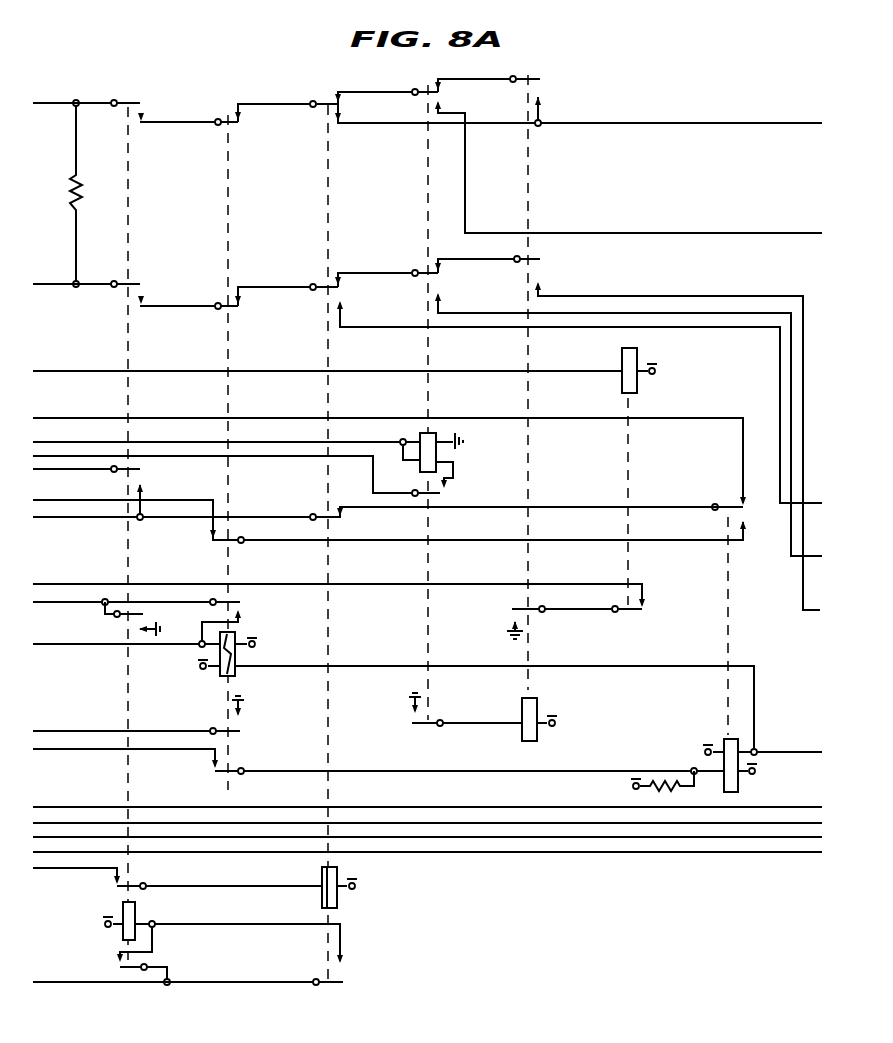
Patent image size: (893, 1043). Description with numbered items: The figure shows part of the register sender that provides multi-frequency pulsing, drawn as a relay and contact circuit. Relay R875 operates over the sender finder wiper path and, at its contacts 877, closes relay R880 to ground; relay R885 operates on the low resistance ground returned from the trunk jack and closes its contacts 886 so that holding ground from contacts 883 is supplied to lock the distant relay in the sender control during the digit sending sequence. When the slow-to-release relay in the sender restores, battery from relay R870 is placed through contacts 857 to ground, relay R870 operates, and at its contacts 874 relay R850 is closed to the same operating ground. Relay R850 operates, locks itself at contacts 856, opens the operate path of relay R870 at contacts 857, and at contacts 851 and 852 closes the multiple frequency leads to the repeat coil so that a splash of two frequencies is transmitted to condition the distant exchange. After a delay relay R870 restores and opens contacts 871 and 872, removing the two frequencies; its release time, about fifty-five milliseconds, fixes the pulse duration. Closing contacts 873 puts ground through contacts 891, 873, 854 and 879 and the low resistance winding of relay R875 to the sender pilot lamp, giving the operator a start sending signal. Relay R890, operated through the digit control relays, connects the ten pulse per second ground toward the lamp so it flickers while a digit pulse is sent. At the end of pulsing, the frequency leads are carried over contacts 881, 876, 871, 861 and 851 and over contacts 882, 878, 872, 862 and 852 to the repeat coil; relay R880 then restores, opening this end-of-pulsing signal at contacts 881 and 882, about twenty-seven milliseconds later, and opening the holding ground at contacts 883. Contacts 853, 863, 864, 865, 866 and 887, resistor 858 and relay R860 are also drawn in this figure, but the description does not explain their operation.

The contacts 851 is at (140, 110).
The contacts 852 is at (140, 294).
The contacts 853 is at (130, 626).
The contacts 854 is at (141, 479).
The contacts 856 is at (110, 963).
The contacts 857 is at (108, 885).
The resistor 858 is at (78, 190).
The contacts 861 is at (242, 128).
The contacts 862 is at (242, 308).
The relay contact 863 is at (242, 606).
The relay contact 864 is at (211, 540).
The relay contact 865 is at (212, 771).
The relay contact 866 is at (245, 726).
The contacts 871 is at (342, 111).
The contacts 872 is at (342, 296).
The contacts 873 is at (342, 522).
The contacts 874 is at (350, 978).
The contacts 876 is at (445, 102).
The contacts 877 is at (408, 724).
The contacts 878 is at (445, 284).
The contacts 879 is at (450, 492).
The contacts 881 is at (542, 89).
The contacts 882 is at (542, 269).
The contacts 883 is at (510, 613).
The contacts 886 is at (648, 609).
The resistor 887 is at (673, 795).
The contacts 891 is at (740, 500).
The relay R850 is at (136, 909).
The relay R860 is at (232, 678).
The slow-to-release relay R870 is at (338, 870).
The relay R875 is at (440, 448).
The relay R880 is at (530, 698).
The relay R885 is at (630, 348).
The relay R890 is at (732, 738).